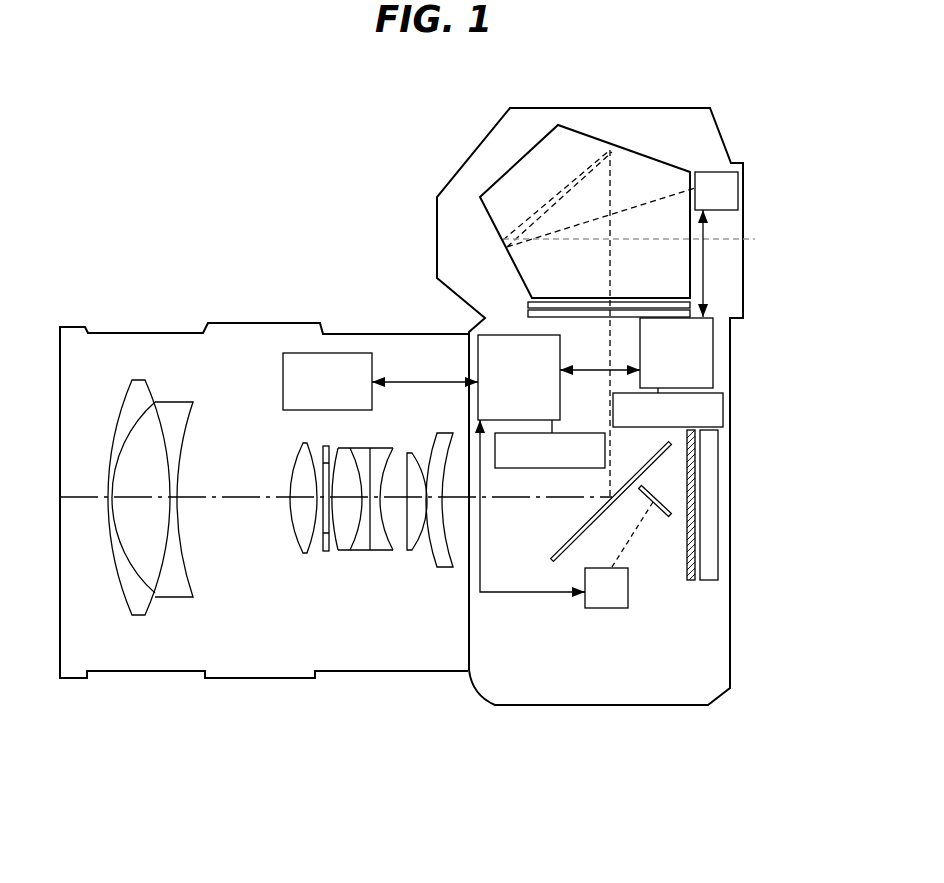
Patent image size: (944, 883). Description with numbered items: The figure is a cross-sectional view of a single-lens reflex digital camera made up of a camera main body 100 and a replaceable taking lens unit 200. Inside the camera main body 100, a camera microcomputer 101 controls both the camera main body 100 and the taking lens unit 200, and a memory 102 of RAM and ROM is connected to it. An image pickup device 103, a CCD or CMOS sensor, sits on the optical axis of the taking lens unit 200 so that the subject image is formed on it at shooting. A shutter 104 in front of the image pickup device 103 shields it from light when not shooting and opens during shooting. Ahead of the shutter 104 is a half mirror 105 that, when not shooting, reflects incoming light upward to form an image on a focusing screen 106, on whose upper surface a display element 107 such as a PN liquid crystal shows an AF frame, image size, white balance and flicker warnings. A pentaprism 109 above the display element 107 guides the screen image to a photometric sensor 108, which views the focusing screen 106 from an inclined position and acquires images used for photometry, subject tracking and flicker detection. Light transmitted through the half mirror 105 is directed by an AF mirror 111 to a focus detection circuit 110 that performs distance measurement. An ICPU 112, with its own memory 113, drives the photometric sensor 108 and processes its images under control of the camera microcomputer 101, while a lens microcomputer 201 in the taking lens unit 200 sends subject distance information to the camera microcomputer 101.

The camera main body 100 is at (703, 662).
The camera microcomputer 101 is at (513, 335).
The memory 102 is at (553, 468).
The image pickup device 103 is at (708, 522).
The shutter 104 is at (693, 447).
The half mirror 105 is at (552, 562).
The focusing screen 106 is at (690, 308).
The display element 107 is at (633, 298).
The photometric sensor 108 is at (738, 188).
The pentaprism 109 is at (502, 203).
The focus detection circuit 110 is at (628, 592).
The AF mirror 111 is at (668, 503).
The ICPU 112 is at (713, 357).
The memory 113 is at (723, 398).
The taking lens unit 200 is at (73, 355).
The lens microcomputer 201 is at (297, 353).